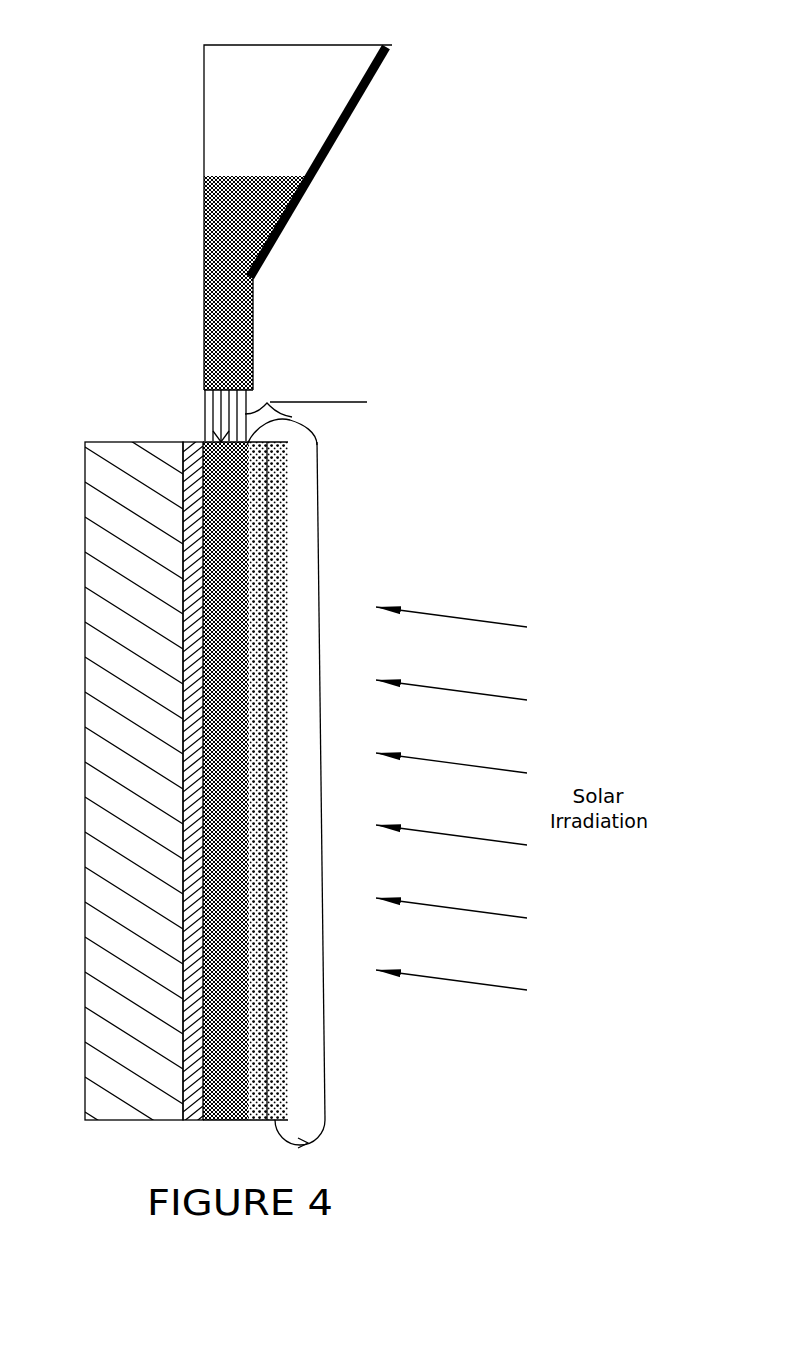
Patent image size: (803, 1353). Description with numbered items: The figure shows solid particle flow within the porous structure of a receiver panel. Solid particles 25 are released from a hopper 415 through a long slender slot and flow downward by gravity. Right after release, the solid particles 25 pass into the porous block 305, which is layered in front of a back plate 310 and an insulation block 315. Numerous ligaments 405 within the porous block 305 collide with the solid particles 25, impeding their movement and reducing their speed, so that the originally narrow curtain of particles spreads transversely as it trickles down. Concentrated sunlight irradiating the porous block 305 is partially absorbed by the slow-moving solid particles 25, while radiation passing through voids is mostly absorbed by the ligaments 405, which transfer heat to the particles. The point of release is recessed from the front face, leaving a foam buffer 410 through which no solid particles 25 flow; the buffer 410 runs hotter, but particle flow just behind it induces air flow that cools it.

The hopper 415 is at (212, 97).
The solid particles 25 is at (215, 226).
The back plate 310 is at (192, 446).
The insulation block 315 is at (118, 445).
The ligaments 405 is at (282, 480).
The porous block 305 is at (283, 415).
The foam buffer 410 is at (267, 404).